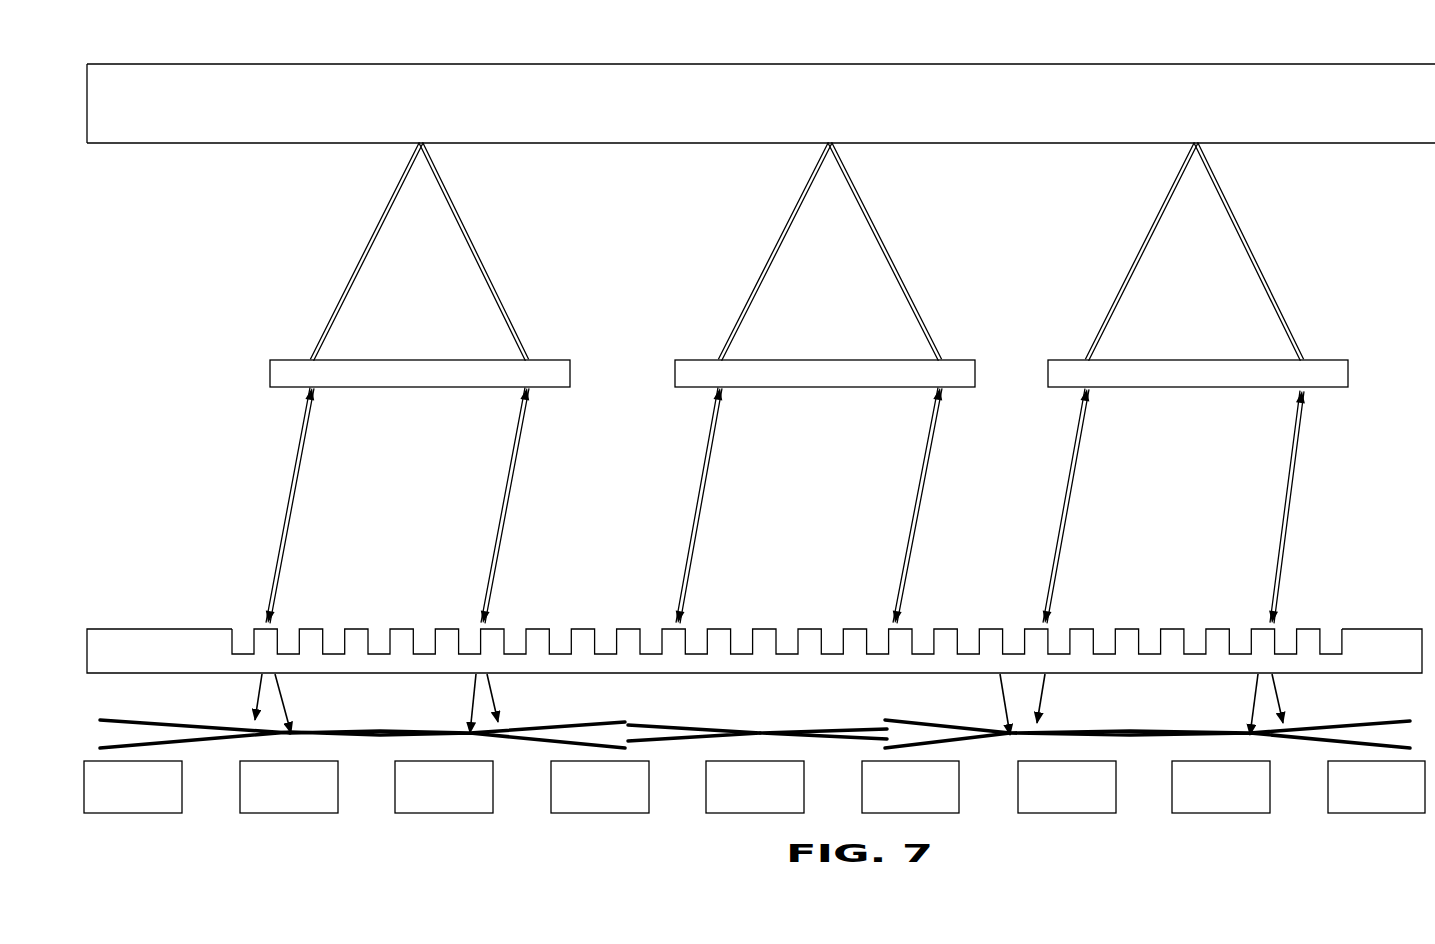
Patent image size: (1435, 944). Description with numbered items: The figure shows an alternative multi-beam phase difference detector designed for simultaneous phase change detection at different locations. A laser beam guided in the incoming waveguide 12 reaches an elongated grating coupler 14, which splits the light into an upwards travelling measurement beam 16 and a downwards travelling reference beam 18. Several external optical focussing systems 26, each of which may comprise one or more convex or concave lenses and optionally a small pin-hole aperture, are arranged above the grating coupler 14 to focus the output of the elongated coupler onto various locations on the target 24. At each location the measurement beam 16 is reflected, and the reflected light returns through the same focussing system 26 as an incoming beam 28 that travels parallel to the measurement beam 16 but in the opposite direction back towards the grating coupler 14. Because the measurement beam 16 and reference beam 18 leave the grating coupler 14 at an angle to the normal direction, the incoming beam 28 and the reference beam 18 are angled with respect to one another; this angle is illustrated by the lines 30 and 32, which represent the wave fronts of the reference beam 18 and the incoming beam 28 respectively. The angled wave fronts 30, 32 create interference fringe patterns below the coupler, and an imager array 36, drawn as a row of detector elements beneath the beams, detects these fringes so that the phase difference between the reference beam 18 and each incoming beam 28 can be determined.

The incoming waveguide 12 is at (143, 628).
The grating coupler 14 is at (383, 628).
The measurement beam 16 is at (817, 506).
The reference beam 18 is at (497, 693).
The target 24 is at (797, 87).
The external optical focussing system 26 is at (279, 358).
The incoming beam 28 is at (508, 461).
The wave front of the reference beam 30 is at (568, 718).
The wave front of the incoming beam 32 is at (163, 722).
The imager array 36 is at (456, 800).